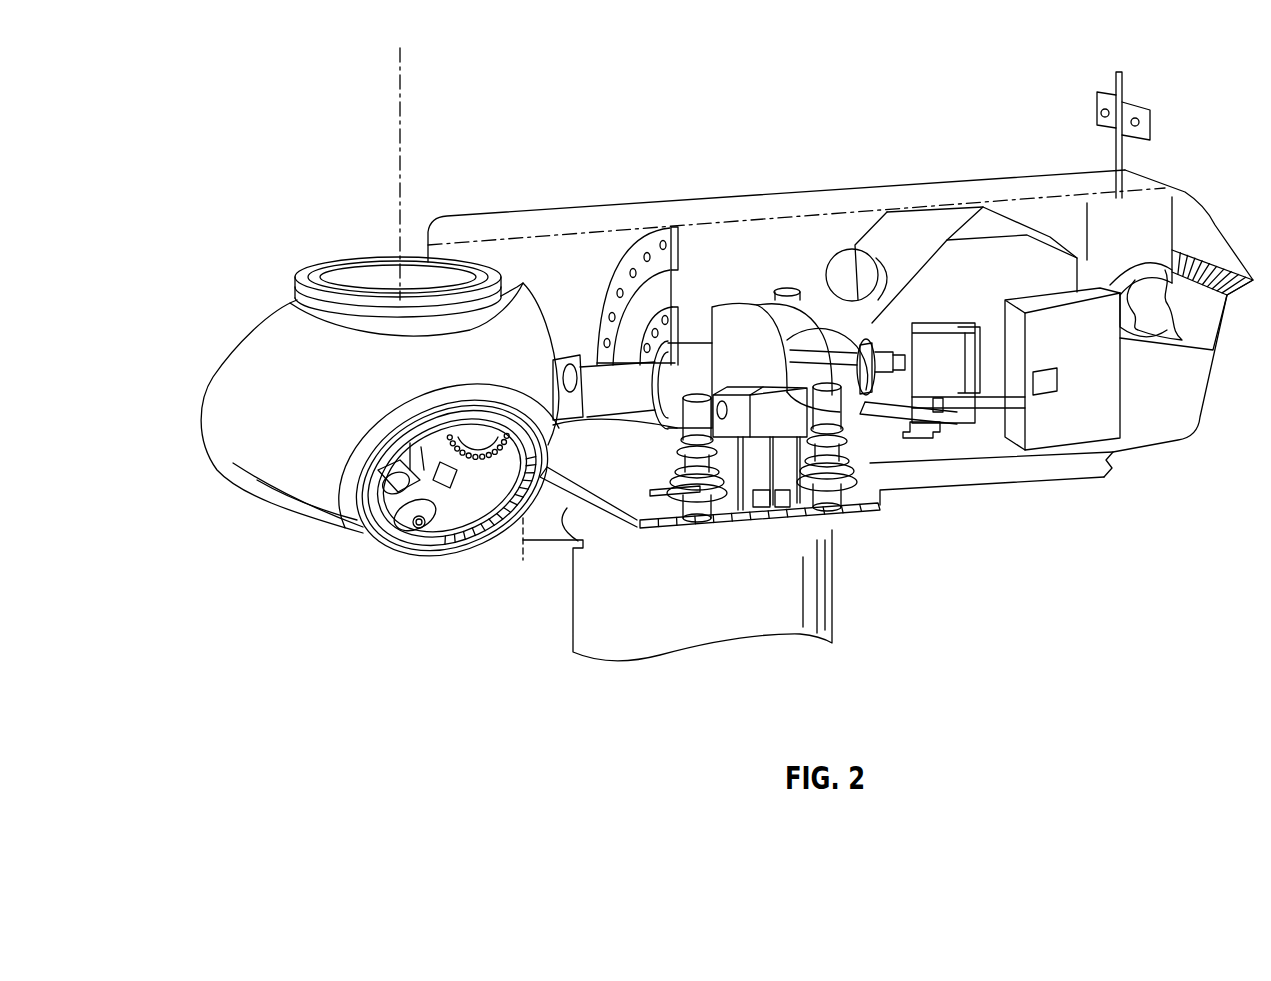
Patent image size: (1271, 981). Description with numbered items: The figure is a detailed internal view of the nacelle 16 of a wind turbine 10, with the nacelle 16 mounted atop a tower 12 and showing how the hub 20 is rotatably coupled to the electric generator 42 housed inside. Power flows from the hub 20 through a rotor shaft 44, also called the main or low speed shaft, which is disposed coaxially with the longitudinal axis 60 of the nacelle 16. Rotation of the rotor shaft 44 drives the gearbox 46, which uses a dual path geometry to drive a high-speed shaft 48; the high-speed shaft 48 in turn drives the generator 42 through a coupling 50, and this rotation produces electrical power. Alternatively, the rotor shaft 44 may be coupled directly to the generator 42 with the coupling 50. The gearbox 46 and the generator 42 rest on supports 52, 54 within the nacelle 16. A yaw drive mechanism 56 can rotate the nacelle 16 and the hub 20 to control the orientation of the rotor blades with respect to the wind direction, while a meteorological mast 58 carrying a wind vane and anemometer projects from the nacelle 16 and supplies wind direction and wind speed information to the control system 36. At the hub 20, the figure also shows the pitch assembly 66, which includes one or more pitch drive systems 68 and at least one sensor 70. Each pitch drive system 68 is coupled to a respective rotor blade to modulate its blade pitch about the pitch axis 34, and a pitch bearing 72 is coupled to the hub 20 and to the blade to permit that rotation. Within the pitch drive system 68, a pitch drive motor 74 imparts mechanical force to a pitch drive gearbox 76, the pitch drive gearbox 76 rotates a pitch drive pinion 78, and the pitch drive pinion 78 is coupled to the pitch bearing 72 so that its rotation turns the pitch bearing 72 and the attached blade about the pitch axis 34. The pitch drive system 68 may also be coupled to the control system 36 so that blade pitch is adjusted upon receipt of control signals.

The wind turbine 10 is at (258, 128).
The tower 12 is at (758, 618).
The nacelle 16 is at (829, 113).
The hub 20 is at (163, 391).
The pitch axis 34 is at (405, 92).
The control system 36 is at (1053, 325).
The electric generator 42 is at (937, 380).
The rotor shaft 44 is at (587, 377).
The gearbox 46 is at (780, 300).
The high-speed shaft 48 is at (848, 408).
The coupling 50 is at (862, 355).
The support 52 is at (777, 503).
The support 54 is at (936, 445).
The yaw drive mechanism 56 is at (712, 520).
The meteorological mast 58 is at (1152, 118).
The longitudinal axis 60 is at (633, 383).
The pitch assembly 66 is at (375, 374).
The pitch drive system 68 is at (362, 496).
The sensor 70 is at (511, 470).
The pitch bearing 72 is at (367, 542).
The pitch drive motor 74 is at (387, 474).
The pitch drive gearbox 76 is at (432, 468).
The pitch drive pinion 78 is at (405, 545).